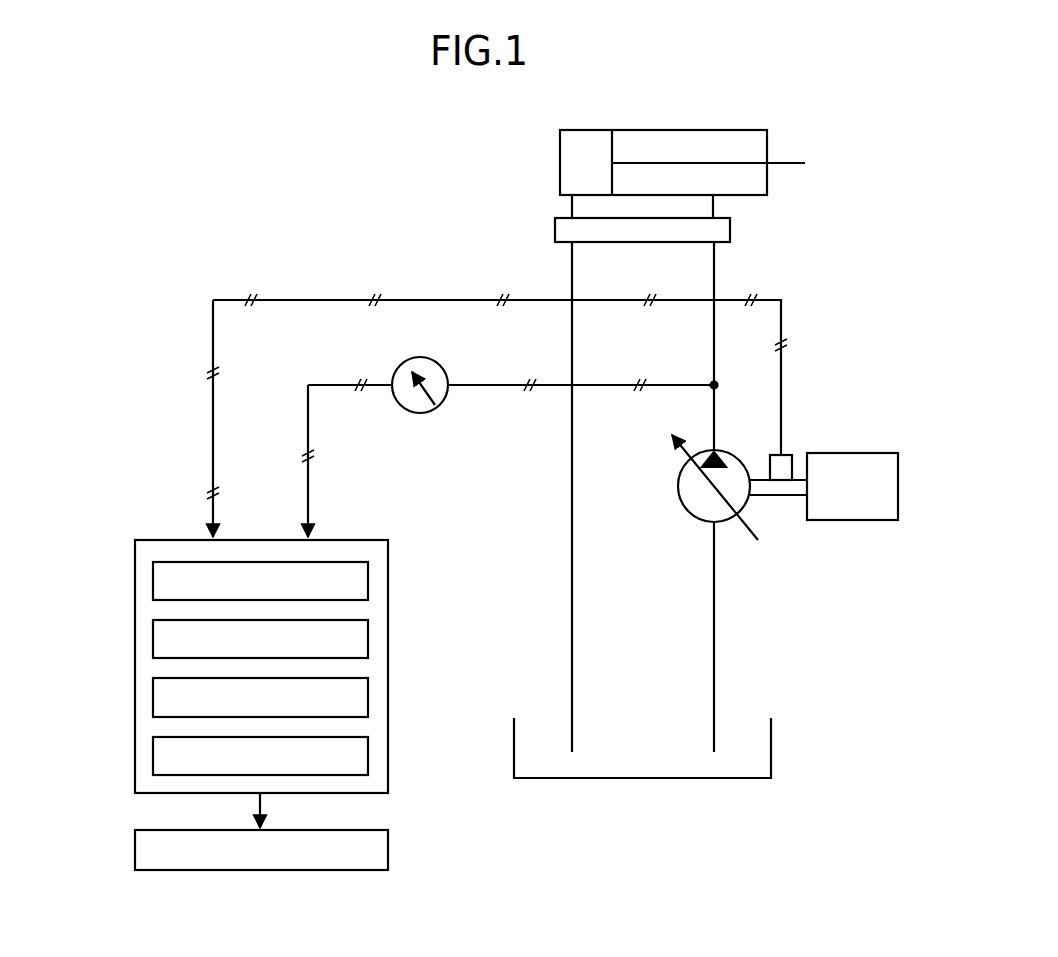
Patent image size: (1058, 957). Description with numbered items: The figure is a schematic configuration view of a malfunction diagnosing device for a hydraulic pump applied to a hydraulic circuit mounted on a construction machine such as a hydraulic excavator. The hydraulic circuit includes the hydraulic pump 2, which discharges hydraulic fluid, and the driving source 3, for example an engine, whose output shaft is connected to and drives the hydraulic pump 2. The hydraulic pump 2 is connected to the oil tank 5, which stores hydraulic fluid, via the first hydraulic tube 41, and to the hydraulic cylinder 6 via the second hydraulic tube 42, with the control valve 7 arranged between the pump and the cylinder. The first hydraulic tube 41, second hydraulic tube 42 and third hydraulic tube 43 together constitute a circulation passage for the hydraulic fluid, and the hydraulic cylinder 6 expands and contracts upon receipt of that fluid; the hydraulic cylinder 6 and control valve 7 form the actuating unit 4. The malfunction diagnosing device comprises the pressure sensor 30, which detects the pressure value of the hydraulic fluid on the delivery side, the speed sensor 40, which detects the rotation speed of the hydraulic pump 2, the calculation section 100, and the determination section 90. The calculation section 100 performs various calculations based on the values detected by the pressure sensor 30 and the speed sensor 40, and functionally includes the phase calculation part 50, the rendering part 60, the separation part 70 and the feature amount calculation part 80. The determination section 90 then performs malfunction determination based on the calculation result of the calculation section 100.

The hydraulic pump 2 is at (725, 451).
The driving source 3 is at (868, 453).
The speed sensor 4 is at (671, 153).
The oil tank 5 is at (772, 743).
The hydraulic cylinder 6 is at (667, 130).
The control valve 7 is at (555, 230).
The pressure sensor 30 is at (428, 358).
The speed sensor 40 is at (787, 455).
The first hydraulic tube 41 is at (715, 622).
The second hydraulic tube 42 is at (715, 268).
The third hydraulic tube 43 is at (573, 268).
The phase calculation part 50 is at (153, 578).
The rendering part 60 is at (153, 633).
The separation part 70 is at (153, 693).
The feature amount calculation part 80 is at (153, 751).
The determination section 90 is at (135, 852).
The calculation section 100 is at (135, 562).